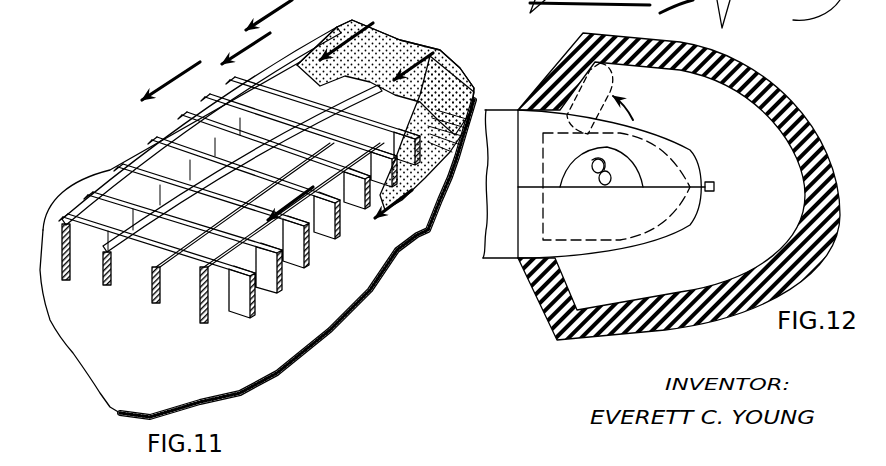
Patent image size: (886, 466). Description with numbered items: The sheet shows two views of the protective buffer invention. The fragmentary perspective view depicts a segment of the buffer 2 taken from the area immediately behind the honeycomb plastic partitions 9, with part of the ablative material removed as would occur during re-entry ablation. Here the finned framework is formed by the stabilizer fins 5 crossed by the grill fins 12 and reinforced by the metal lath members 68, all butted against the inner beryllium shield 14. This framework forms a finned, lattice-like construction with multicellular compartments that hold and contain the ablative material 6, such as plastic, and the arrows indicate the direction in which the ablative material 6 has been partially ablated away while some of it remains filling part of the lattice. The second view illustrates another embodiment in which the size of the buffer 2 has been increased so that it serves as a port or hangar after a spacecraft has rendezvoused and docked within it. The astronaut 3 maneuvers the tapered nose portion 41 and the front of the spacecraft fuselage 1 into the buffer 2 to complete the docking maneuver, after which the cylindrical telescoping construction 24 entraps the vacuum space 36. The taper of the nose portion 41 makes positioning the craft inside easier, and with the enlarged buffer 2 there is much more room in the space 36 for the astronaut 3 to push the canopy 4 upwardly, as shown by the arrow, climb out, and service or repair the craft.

In FIG. 12, the spacecraft fuselage 1 is at (497, 240).
In FIG. 12, the buffer 2 is at (783, 88).
In FIG. 12, the astronaut 3 is at (605, 168).
In FIG. 12, the canopy 4 is at (613, 77).
In FIG. 11, the fins 5 is at (215, 290).
In FIG. 12, the fins 5 is at (487, 0).
In FIG. 11, the ablative material 6 is at (364, 60).
In FIG. 12, the honeycomb plastic partitions 9 is at (786, 0).
In FIG. 11, the grill fins 12 is at (160, 287).
In FIG. 12, the grill fins 12 is at (633, 22).
In FIG. 11, the inner beryllium shield 14 is at (100, 393).
In FIG. 12, the cylindrical telescoping construction 24 is at (711, 182).
In FIG. 12, the vacuum space 36 is at (673, 275).
In FIG. 12, the nose portion 41 is at (611, 186).
In FIG. 11, the reinforcing metal lath members 68 is at (170, 225).